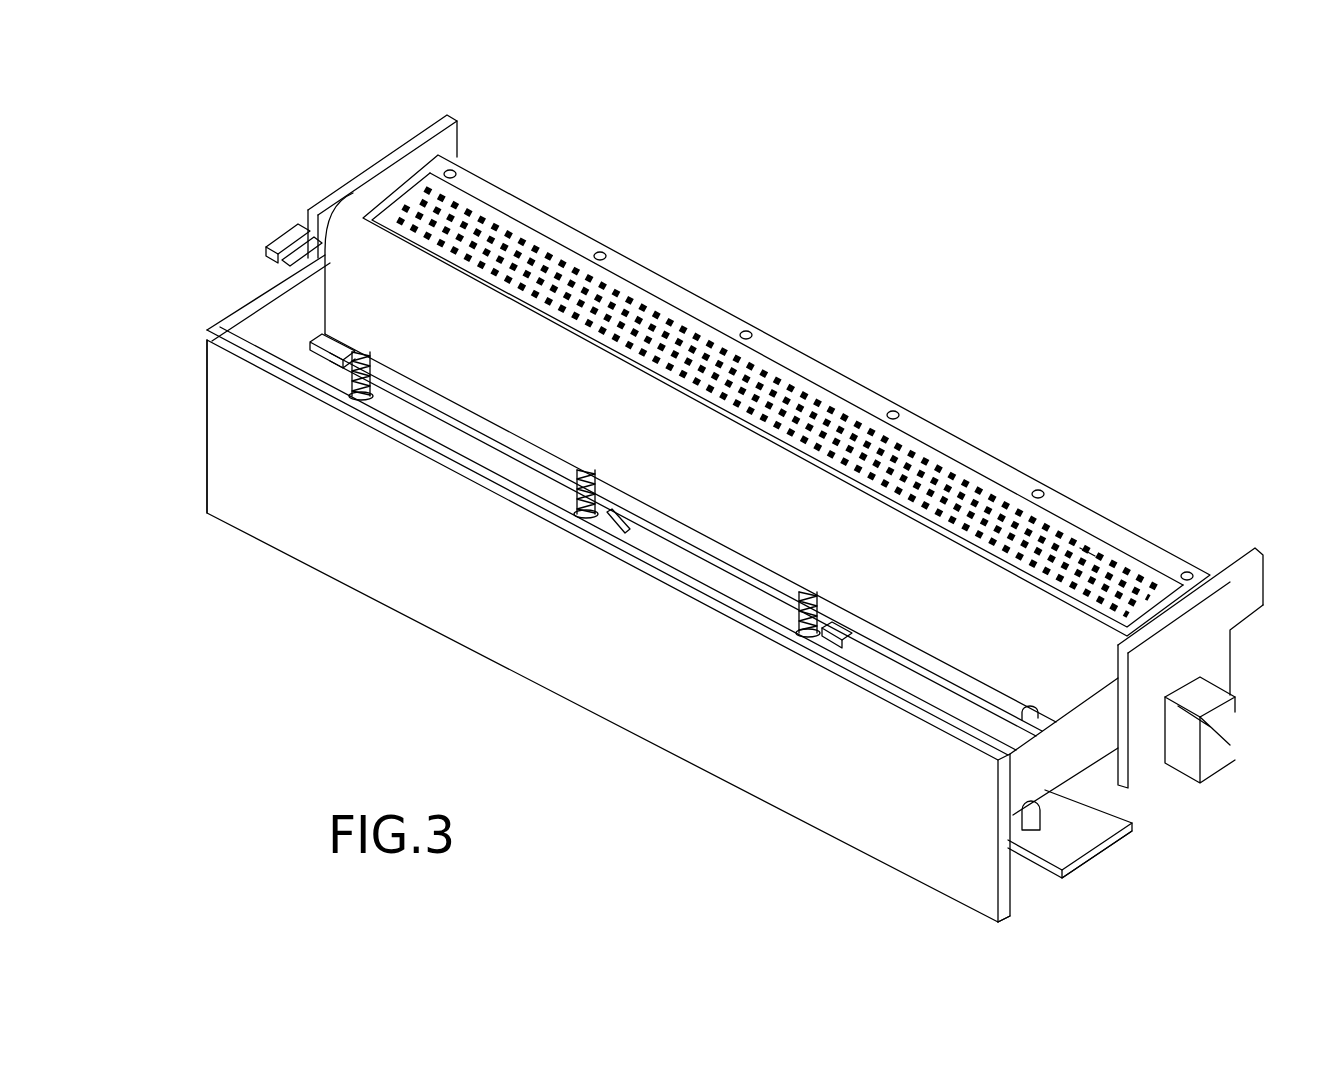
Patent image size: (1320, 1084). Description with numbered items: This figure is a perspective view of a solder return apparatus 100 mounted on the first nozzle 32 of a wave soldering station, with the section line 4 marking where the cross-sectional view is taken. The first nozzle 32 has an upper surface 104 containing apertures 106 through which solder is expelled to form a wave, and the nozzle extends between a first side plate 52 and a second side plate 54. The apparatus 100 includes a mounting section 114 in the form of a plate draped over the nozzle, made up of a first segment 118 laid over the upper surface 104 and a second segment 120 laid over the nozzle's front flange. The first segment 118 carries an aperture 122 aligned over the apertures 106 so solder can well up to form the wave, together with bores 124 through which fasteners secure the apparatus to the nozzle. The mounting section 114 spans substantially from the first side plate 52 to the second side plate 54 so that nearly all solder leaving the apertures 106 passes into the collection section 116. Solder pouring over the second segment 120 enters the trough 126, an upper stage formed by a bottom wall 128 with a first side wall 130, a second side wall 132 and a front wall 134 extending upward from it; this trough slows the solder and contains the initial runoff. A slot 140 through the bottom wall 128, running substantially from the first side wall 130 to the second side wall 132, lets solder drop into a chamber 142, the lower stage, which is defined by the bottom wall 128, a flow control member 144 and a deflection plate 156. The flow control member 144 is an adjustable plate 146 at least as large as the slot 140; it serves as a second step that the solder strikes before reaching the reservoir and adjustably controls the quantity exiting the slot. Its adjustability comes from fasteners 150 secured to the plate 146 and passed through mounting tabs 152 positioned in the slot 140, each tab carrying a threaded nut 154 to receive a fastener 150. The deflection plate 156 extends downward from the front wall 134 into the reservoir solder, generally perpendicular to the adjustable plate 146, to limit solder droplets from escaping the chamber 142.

The first nozzle 32 is at (1163, 610).
The first side plate 52 is at (445, 116).
The second side plate 54 is at (1217, 645).
The solder return apparatus 100 is at (845, 228).
The upper surface 104 is at (1141, 575).
The apertures 106 is at (1088, 550).
The mounting section 114 is at (583, 228).
The collection section 116 is at (204, 272).
The first segment 118 is at (481, 184).
The second segment 120 is at (353, 232).
The aperture 122 is at (647, 290).
The bores 124 is at (893, 410).
The trough 126 is at (263, 300).
The bottom wall 128 is at (445, 397).
The first side wall 130 is at (250, 330).
The second side wall 132 is at (1073, 735).
The front wall 134 is at (208, 348).
The slot 140 is at (482, 445).
The chamber 142 is at (1010, 882).
The flow control member 144 is at (1113, 852).
The adjustable plate 146 is at (1082, 868).
The fasteners 150 is at (815, 596).
The mounting tabs 152 is at (842, 630).
The threaded nut 154 is at (823, 617).
The deflection plate 156 is at (790, 795).
The section line 4- 4 is at (567, 727).